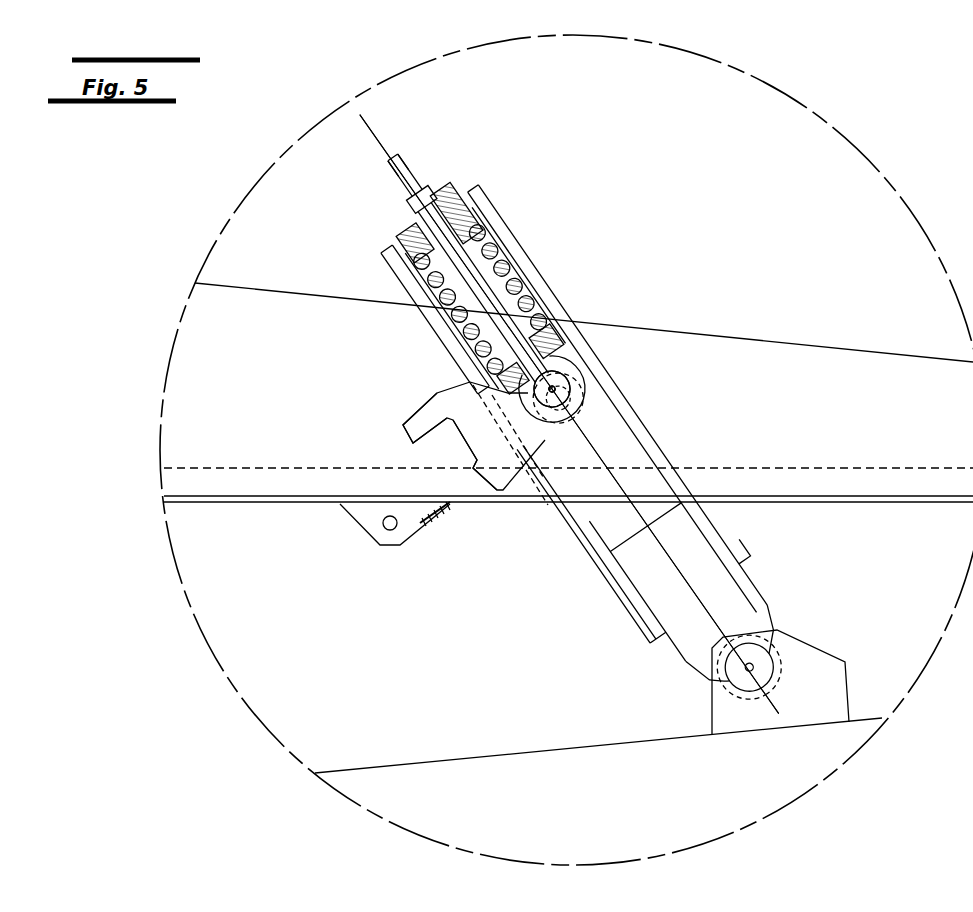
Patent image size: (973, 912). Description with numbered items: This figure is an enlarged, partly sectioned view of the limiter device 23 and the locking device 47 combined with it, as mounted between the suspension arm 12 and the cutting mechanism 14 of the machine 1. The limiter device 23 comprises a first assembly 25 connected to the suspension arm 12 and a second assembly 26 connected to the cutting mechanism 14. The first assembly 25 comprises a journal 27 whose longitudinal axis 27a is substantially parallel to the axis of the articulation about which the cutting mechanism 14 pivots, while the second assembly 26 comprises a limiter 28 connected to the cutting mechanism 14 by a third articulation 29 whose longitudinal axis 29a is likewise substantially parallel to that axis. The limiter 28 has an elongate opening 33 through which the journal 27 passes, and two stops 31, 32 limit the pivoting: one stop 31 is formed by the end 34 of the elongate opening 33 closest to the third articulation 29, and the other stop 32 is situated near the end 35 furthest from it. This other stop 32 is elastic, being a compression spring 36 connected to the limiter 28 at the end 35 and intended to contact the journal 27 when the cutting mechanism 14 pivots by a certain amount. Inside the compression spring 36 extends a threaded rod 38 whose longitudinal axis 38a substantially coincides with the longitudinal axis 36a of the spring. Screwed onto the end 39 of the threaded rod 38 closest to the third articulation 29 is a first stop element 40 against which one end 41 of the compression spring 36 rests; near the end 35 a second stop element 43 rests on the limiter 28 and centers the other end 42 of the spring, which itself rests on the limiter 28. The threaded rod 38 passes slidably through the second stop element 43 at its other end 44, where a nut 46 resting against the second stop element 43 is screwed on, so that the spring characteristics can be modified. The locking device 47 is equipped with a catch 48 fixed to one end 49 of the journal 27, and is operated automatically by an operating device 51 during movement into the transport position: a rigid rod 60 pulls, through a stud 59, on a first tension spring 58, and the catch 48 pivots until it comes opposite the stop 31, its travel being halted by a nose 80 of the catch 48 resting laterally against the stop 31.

The mower unit 1 is at (836, 346).
The suspension arm 12 is at (907, 367).
The cutting mechanism 14 is at (487, 762).
The limiter device 23 is at (491, 190).
The first assembly 25 is at (603, 345).
The second assembly 26 is at (613, 582).
The journal 27 is at (553, 392).
The longitudinal axis of the journal 27a is at (560, 392).
The limiter 28 is at (746, 546).
The third articulation 29 is at (772, 678).
The longitudinal axis of the third articulation 29a is at (752, 662).
The stop 31 is at (600, 492).
The stop 32 is at (539, 306).
The elongate opening 33 is at (623, 430).
The end of the elongate opening 34 is at (523, 548).
The end of the elongate opening 35 is at (496, 234).
The compression spring 36 is at (433, 282).
The longitudinal axis of the compression spring 36a is at (372, 133).
The threaded rod 38 is at (382, 164).
The longitudinal axis of the threaded rod 38a is at (569, 401).
The end of the threaded rod 39 is at (592, 359).
The first stop element 40 is at (574, 342).
The end of the compression spring 41 is at (488, 368).
The other end of the compression spring 42 is at (408, 266).
The second stop element 43 is at (447, 196).
The other end of the threaded rod 44 is at (385, 178).
The nut 46 is at (405, 213).
The locking device 47 is at (400, 433).
The catch 48 is at (477, 418).
The end of the journal 49 is at (601, 385).
The operating device 51 is at (921, 503).
The first tension spring 58 is at (440, 520).
The stud 59 is at (383, 523).
The rigid rod 60 is at (957, 500).
The nose 80 is at (418, 415).